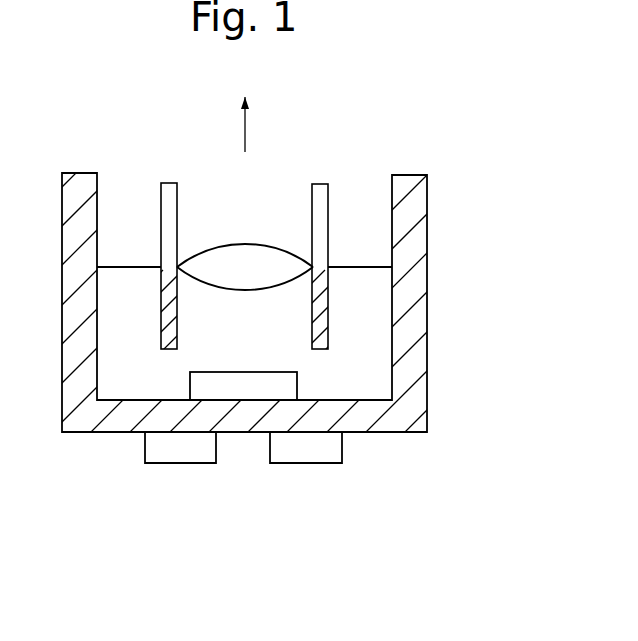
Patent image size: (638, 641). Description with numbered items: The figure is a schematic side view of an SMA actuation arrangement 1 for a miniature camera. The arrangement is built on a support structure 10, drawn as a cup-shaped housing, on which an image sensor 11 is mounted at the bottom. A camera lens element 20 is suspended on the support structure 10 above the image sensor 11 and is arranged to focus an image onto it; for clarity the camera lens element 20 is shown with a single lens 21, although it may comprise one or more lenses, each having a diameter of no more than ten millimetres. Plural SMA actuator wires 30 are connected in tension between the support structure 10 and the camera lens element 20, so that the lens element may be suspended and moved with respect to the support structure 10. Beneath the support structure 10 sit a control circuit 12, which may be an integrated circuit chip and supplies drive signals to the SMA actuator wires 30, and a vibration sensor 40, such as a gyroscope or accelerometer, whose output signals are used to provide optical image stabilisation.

The SMA actuation arrangement 1 is at (137, 157).
The support structure 10 is at (415, 325).
The image sensor 11 is at (240, 388).
The control circuit 12 is at (161, 453).
The camera lens element 20 is at (270, 232).
The lens 21 is at (223, 253).
The SMA actuator wires 30 is at (128, 268).
The vibration sensor 40 is at (325, 455).